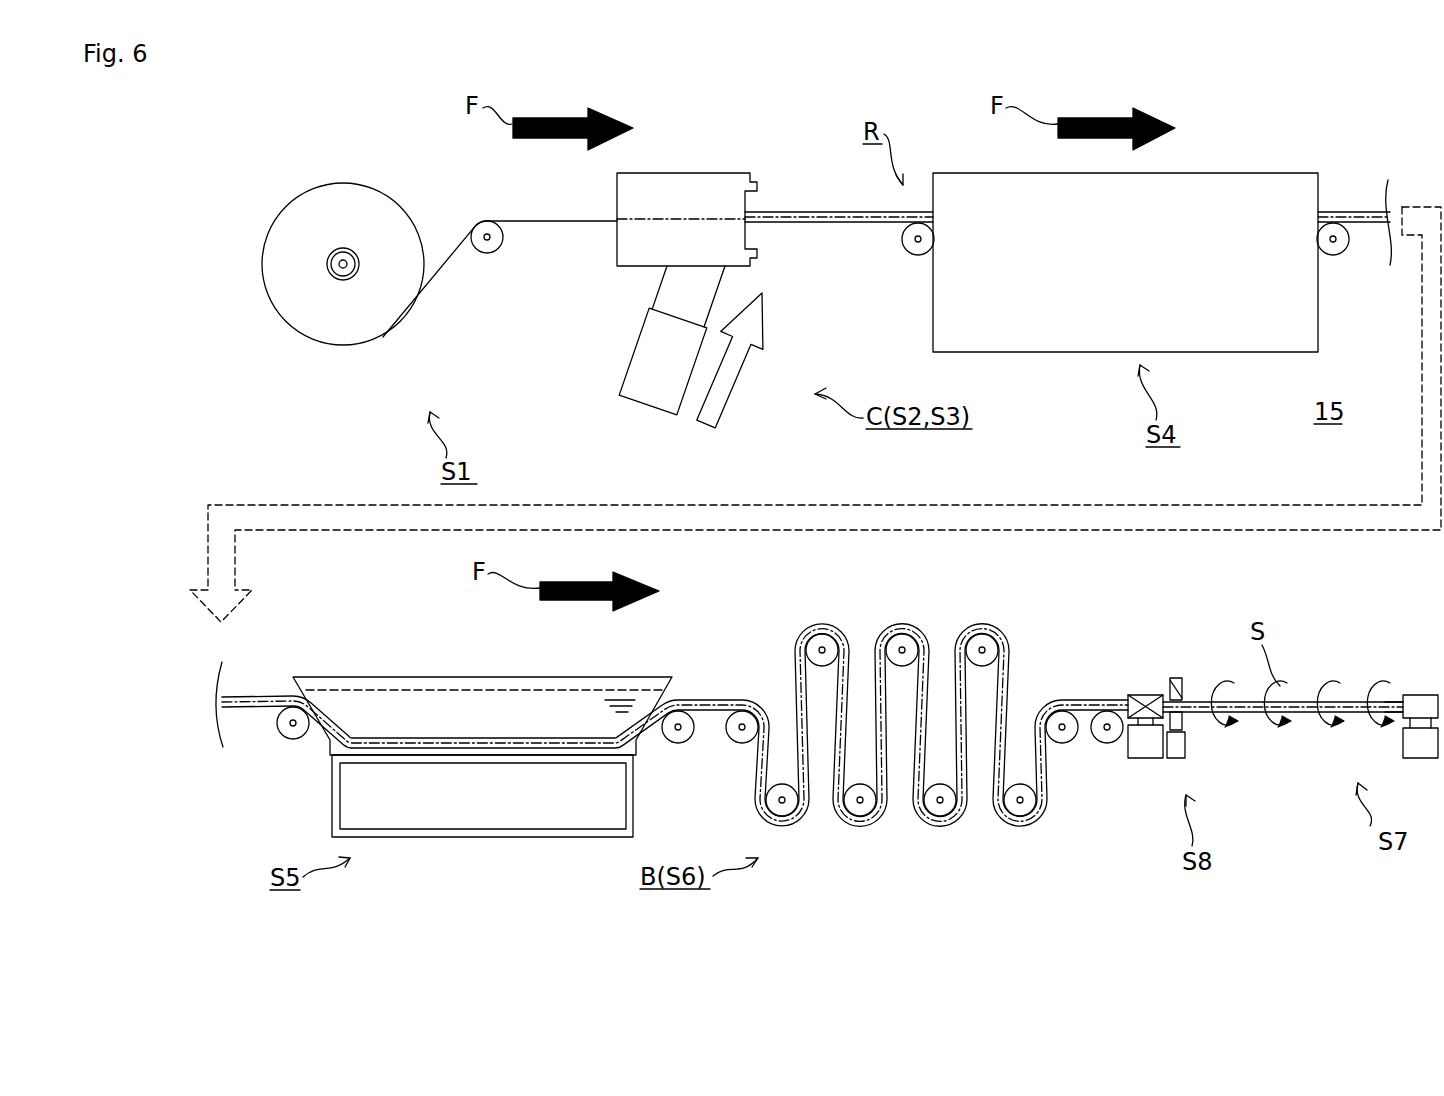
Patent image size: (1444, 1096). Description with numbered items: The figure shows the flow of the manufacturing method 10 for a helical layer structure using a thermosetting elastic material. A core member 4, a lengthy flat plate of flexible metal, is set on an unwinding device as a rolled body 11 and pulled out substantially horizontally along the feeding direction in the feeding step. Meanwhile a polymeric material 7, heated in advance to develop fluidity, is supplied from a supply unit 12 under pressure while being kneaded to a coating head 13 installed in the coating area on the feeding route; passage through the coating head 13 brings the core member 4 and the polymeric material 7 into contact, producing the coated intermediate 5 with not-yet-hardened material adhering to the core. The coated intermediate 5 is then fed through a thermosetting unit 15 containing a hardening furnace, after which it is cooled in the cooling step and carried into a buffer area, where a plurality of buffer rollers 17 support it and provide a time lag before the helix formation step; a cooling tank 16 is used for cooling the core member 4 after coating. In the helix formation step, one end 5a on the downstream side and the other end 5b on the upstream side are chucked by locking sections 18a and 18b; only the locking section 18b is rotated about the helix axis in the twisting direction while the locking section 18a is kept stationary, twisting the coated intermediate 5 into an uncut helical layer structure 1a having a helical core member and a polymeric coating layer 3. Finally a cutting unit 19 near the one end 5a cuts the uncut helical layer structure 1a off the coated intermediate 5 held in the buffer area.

The manufacturing method 10 is at (330, 136).
The rolled body 11 is at (370, 305).
The core member 4 is at (447, 265).
The supply unit 12 is at (603, 336).
The coating head 13 is at (707, 192).
The polymeric material 7 is at (733, 368).
The coated intermediate 5 is at (832, 225).
The thermosetting unit 15 is at (1325, 400).
The cooling tank 16 is at (452, 847).
The buffer rollers 17 is at (822, 636).
The polymeric coating layer 3 is at (692, 700).
The locking section 18a is at (1150, 694).
The locking section 18b is at (1422, 694).
The one end 5a is at (1178, 677).
The other end 5b is at (1395, 693).
The cutting unit 19 is at (1180, 746).
The uncut helical layer structure 1a is at (1295, 714).